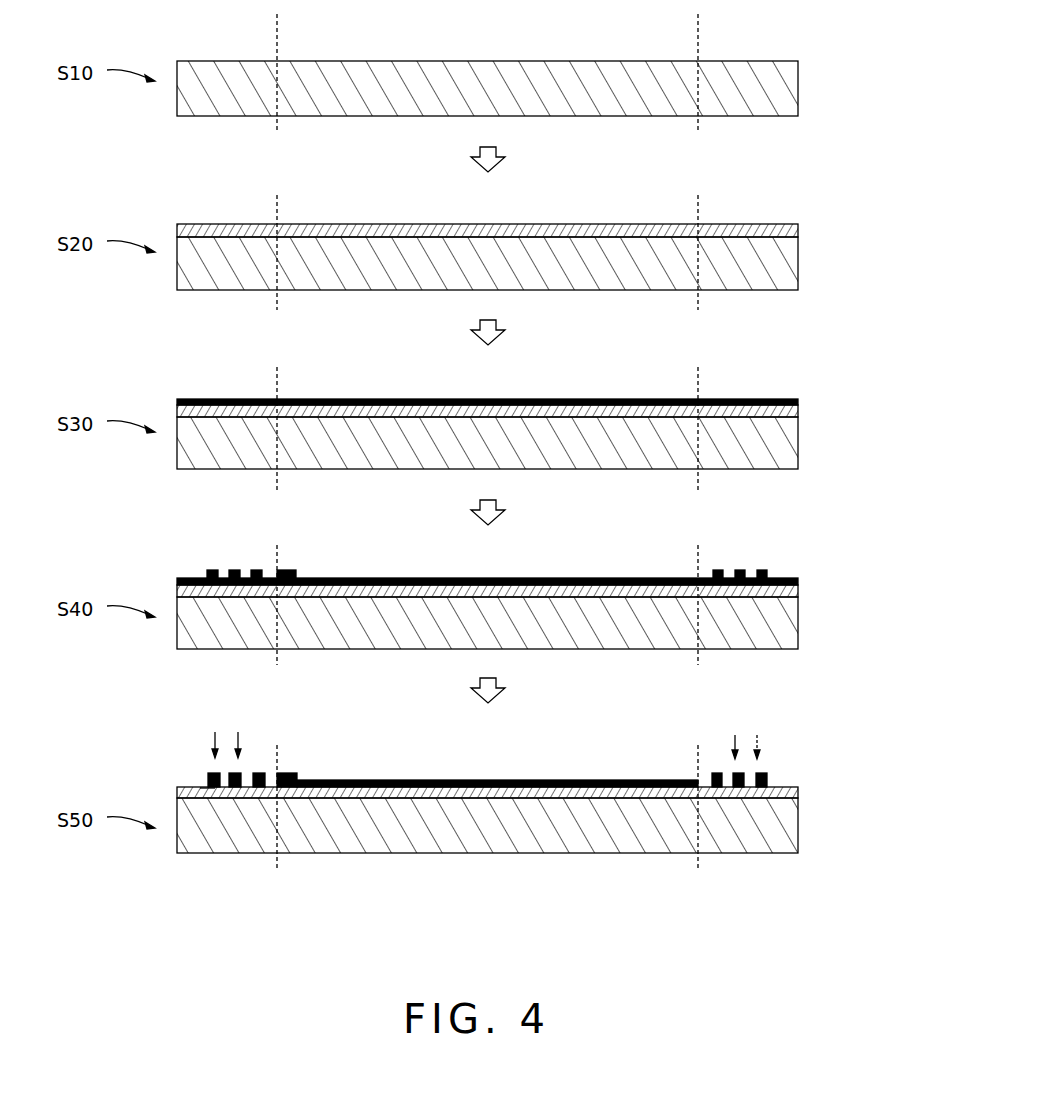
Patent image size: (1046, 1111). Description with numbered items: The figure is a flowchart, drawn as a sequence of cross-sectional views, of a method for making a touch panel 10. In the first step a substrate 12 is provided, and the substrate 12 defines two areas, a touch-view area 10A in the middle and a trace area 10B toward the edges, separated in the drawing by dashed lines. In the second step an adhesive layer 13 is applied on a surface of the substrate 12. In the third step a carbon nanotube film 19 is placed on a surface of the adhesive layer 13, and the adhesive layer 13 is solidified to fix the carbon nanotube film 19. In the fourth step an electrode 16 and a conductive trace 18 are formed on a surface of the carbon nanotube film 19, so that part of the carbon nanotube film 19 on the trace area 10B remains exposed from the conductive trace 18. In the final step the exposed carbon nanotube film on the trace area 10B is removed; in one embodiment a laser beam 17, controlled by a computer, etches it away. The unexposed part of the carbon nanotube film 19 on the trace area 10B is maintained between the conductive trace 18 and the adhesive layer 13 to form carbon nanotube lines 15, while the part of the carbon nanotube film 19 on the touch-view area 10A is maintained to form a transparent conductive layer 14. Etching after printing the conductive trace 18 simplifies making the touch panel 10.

The touch panel 10 is at (442, 750).
The touch-view area 10A is at (419, 442).
The trace area 10B is at (735, 442).
The substrate 12 is at (783, 87).
The adhesive layer 13 is at (800, 227).
The transparent conductive layer 14 is at (641, 780).
The carbon nanotube lines 15 is at (207, 789).
The electrode 16 is at (291, 568).
The laser beam 17 is at (212, 735).
The conductive trace 18 is at (211, 568).
The carbon nanotube film 19 is at (799, 399).